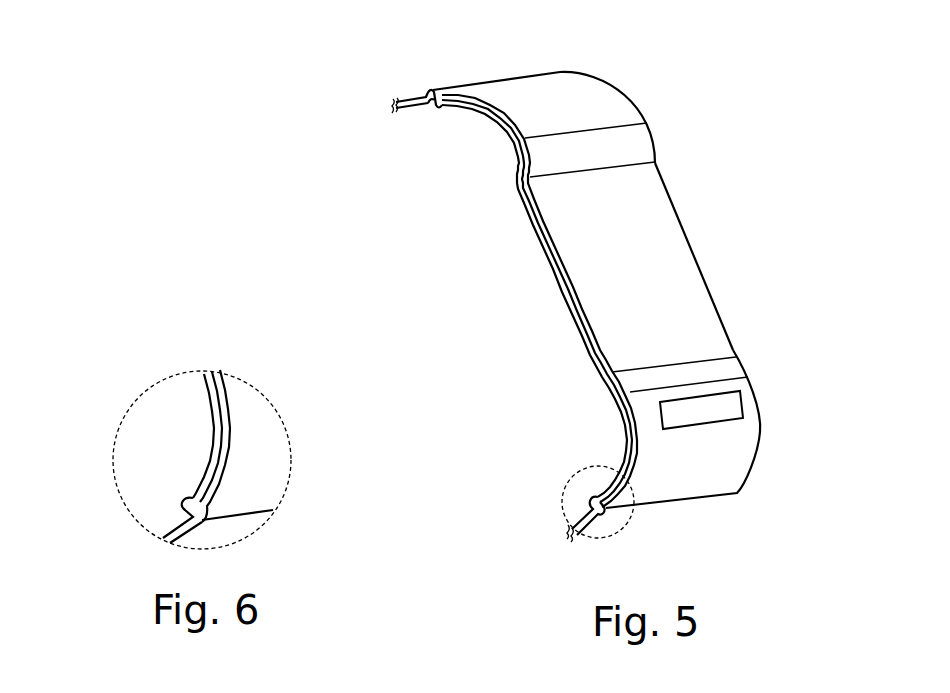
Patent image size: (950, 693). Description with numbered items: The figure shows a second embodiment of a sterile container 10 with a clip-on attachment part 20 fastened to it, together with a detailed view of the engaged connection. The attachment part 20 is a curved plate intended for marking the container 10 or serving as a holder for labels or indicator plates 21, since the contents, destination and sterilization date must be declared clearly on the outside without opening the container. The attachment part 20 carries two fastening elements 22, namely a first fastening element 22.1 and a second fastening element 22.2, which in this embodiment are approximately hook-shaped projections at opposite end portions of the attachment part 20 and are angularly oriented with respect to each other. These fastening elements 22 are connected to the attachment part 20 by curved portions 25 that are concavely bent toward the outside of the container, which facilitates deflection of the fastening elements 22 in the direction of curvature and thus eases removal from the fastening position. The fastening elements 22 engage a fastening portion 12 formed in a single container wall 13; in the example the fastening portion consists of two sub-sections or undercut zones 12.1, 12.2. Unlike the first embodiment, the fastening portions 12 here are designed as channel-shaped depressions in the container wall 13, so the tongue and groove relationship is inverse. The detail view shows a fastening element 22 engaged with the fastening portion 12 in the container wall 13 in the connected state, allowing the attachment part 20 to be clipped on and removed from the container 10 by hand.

In FIG. 5, the container 10 is at (478, 75).
In FIG. 5, the second fastening element 22.2 is at (573, 105).
In FIG. 5, the attachment part 20 is at (707, 250).
In FIG. 5, the first fastening element 22.1 is at (697, 467).
In FIG. 5, the curved portions 25 is at (653, 378).
In FIG. 5, the labels/indicator plates 21 is at (732, 403).
In FIG. 5, the container wall 13 is at (527, 207).
In FIG. 6, the container wall 13 is at (217, 398).
In FIG. 5, the sub-section/undercut zone 12.2 is at (428, 108).
In FIG. 5, the sub-section/undercut zone 12.1 is at (612, 510).
In FIG. 6, the fastening element 22 is at (228, 457).
In FIG. 6, the fastening portion 12 is at (180, 510).